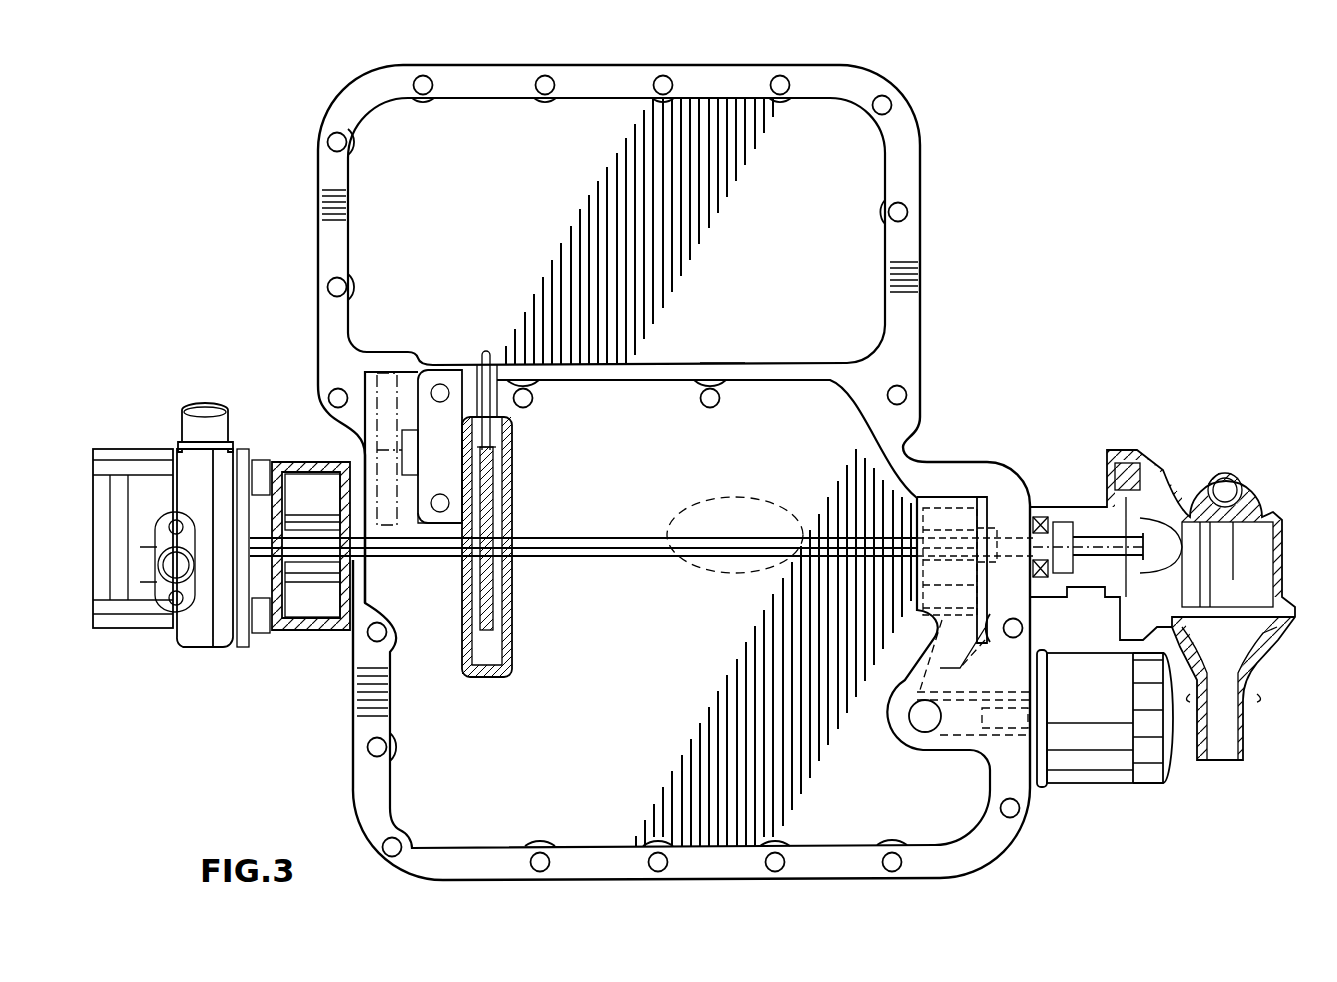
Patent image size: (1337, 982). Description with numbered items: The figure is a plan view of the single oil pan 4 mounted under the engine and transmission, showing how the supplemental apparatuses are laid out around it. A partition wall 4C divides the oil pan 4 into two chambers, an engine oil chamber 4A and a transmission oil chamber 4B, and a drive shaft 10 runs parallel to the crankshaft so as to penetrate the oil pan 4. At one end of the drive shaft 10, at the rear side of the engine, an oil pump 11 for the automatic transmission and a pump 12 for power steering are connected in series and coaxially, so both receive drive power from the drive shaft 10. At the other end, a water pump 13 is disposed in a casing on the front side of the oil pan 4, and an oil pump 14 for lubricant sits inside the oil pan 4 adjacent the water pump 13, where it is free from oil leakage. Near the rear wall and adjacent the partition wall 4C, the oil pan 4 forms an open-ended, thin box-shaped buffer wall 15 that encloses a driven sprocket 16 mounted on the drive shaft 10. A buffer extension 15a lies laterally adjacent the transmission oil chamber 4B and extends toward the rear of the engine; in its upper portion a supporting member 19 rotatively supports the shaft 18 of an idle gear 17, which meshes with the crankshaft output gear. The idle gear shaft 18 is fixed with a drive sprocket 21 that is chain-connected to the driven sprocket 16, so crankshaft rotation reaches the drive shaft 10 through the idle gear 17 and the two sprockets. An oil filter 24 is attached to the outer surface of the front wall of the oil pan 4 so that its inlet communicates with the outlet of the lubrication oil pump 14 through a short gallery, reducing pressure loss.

The oil pan 4 is at (1010, 828).
The engine oil chamber 4A is at (675, 703).
The transmission oil chamber 4B is at (618, 250).
The partition wall 4C is at (727, 363).
The drive shaft 10 is at (835, 545).
The oil pump for automatic transmission 11 is at (305, 630).
The pump for power steering 12 is at (143, 627).
The water pump 13 is at (1138, 448).
The oil pump for lubricant 14 is at (955, 515).
The buffer wall 15 is at (470, 676).
The buffer extension 15a is at (424, 527).
The sprocket 16 is at (490, 633).
The idle gear 17 is at (375, 400).
The shaft of idle gear 18 is at (402, 452).
The supporting member 19 is at (437, 417).
The drive sprocket 21 is at (470, 367).
The oil filter 24 is at (1118, 773).